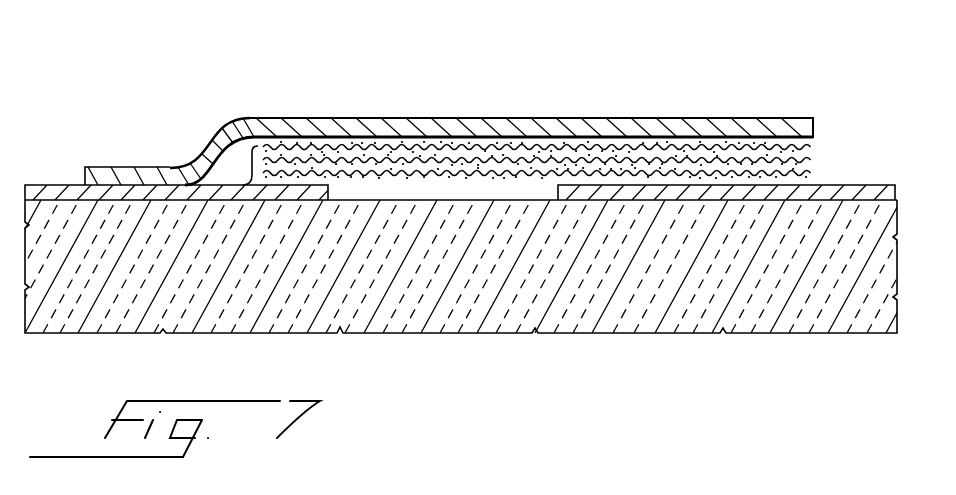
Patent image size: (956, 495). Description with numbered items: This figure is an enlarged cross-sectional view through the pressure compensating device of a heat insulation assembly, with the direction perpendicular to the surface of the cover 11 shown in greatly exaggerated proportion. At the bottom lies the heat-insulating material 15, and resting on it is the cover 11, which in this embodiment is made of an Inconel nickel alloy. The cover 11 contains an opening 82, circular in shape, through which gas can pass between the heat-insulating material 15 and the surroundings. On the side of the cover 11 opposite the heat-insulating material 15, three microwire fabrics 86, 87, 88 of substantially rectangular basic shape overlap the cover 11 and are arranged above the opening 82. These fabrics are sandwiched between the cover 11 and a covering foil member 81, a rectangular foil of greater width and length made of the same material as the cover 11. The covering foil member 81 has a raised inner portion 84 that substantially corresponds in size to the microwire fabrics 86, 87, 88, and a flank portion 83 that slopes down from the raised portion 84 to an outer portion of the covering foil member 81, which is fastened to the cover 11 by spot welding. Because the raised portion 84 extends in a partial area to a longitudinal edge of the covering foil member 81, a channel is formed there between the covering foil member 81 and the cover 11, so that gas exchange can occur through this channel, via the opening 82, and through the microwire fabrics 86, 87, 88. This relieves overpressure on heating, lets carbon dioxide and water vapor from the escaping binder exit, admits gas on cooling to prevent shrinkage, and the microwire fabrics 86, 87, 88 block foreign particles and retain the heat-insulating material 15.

The cover 11 is at (835, 185).
The heat-insulating material 15 is at (587, 333).
The covering foil member 81 is at (105, 167).
The opening 82 is at (328, 200).
The flank portion 83 is at (209, 138).
The raised inner portion 84 is at (467, 118).
The microwire fabric 86 is at (655, 147).
The microwire fabric 87 is at (610, 158).
The microwire fabric 88 is at (557, 172).